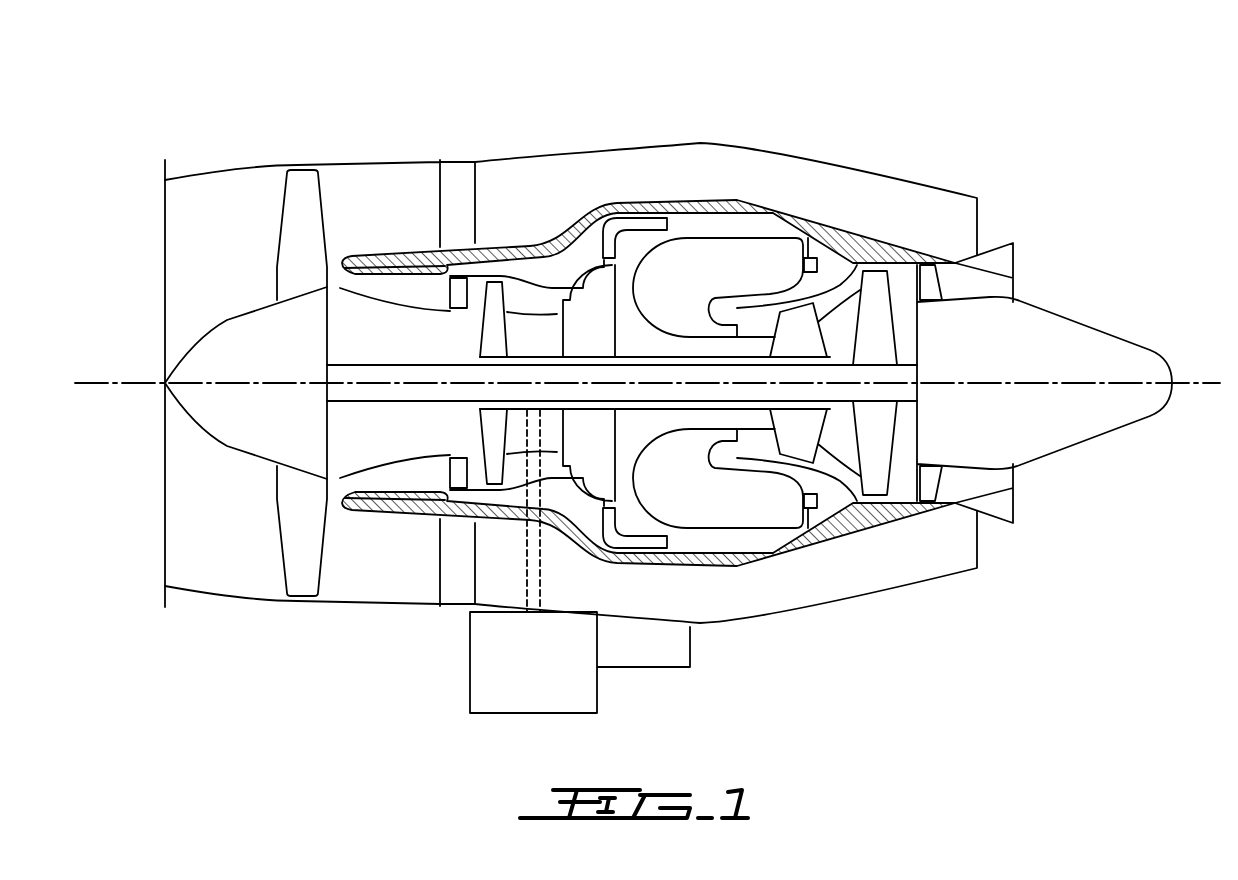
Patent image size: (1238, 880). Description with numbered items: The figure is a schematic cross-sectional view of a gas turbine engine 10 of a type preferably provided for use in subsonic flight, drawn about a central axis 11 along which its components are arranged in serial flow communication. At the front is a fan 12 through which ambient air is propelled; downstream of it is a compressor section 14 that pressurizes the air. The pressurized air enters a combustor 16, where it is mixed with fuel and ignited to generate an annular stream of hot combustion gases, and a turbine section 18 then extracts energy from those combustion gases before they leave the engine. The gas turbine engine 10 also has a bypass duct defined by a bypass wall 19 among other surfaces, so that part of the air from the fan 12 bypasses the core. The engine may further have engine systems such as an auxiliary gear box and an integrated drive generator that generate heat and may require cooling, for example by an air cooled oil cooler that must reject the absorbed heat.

The gas turbine engine 10 is at (647, 380).
The central axis 11 is at (1205, 383).
The fan 12 is at (298, 522).
The compressor section 14 is at (527, 292).
The combustor 16 is at (720, 257).
The turbine section 18 is at (838, 443).
The bypass wall 19 is at (588, 612).